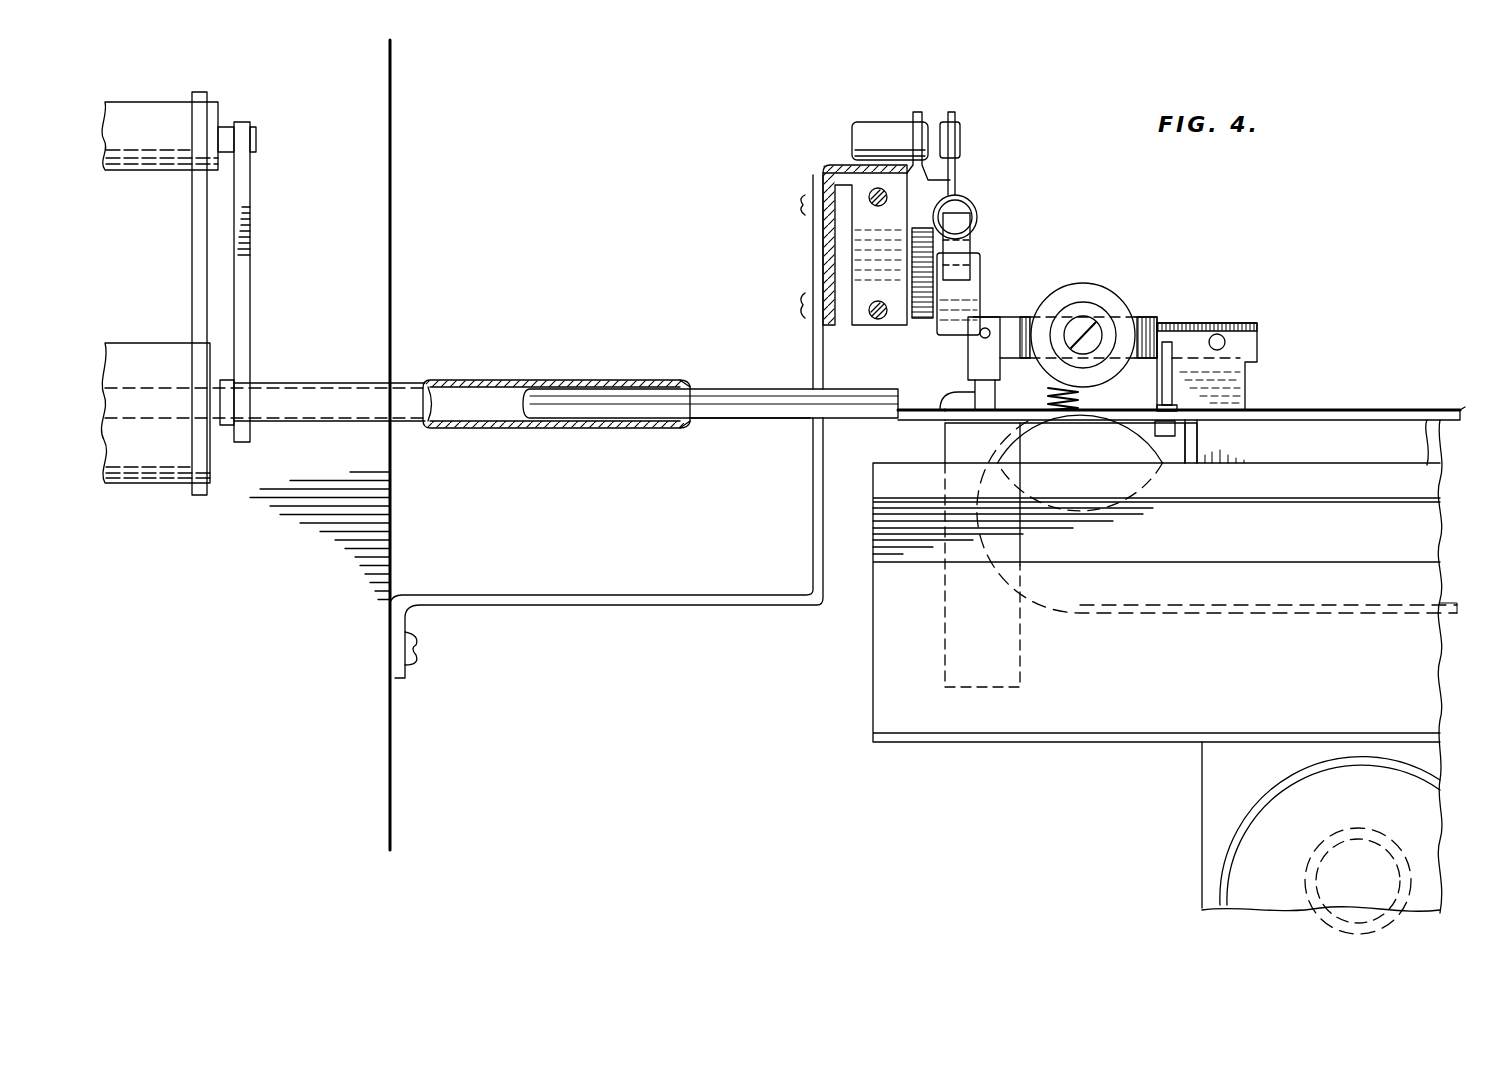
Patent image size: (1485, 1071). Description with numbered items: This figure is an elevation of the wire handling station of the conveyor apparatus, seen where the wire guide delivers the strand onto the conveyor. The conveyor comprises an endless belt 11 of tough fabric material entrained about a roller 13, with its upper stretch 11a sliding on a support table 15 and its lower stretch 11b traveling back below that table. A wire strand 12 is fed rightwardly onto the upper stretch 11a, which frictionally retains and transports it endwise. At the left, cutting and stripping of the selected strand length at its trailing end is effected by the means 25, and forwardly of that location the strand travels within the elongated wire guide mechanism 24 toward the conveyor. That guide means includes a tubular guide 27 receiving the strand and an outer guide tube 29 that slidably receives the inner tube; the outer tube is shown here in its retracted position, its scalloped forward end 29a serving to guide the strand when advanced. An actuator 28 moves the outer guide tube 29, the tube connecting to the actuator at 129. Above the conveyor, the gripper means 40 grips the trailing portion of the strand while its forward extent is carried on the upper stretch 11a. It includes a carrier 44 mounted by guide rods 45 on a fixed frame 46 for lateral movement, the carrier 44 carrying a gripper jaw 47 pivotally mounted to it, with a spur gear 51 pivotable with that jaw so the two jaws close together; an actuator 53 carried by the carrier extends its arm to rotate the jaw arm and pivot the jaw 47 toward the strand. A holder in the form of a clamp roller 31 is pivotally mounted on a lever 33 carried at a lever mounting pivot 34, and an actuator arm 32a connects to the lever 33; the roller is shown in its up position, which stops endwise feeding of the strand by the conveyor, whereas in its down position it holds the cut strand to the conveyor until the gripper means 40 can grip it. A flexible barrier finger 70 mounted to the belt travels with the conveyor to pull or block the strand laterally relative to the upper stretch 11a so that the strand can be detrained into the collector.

The endless belt 11 is at (1395, 408).
The upper stretch 11a is at (1287, 409).
The lower stretch 11b is at (1273, 615).
The wire strand 12 is at (908, 402).
The roller 13 is at (1080, 463).
The support table 15 is at (1303, 420).
The wire guide mechanism 24 is at (585, 372).
The cutting and stripping means 25 is at (155, 510).
The tubular guide 27 is at (718, 422).
The actuator 28 is at (128, 110).
The outer guide tube 29 is at (470, 382).
The scalloped forward end 29a is at (703, 400).
The clamp roller 31 is at (1103, 297).
The arm 32a is at (940, 397).
The lever 33 is at (1150, 320).
The lever mounting pivot 34 is at (1225, 330).
The gripper means 40 is at (1010, 292).
The carrier 44 is at (858, 233).
The guide rods 45 is at (870, 190).
The fixed frame 46 is at (812, 190).
The gripper jaw 47 is at (980, 300).
The spur gear 51 is at (915, 266).
The actuator 53 is at (968, 200).
The barrier finger 70 is at (1178, 385).
The tube connection 129 is at (253, 292).